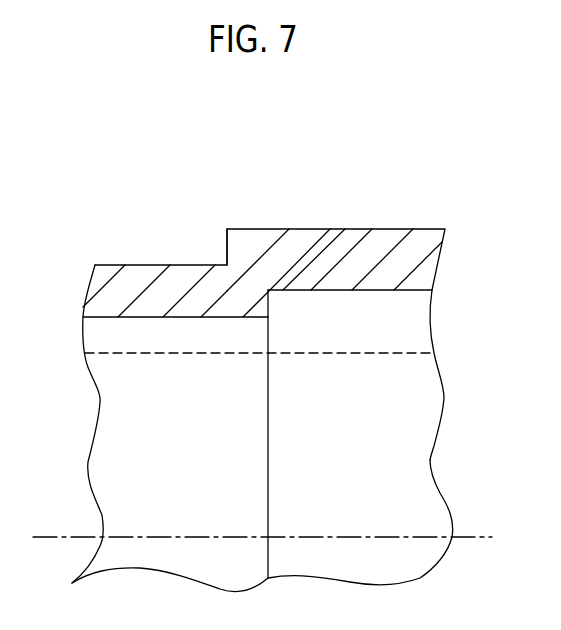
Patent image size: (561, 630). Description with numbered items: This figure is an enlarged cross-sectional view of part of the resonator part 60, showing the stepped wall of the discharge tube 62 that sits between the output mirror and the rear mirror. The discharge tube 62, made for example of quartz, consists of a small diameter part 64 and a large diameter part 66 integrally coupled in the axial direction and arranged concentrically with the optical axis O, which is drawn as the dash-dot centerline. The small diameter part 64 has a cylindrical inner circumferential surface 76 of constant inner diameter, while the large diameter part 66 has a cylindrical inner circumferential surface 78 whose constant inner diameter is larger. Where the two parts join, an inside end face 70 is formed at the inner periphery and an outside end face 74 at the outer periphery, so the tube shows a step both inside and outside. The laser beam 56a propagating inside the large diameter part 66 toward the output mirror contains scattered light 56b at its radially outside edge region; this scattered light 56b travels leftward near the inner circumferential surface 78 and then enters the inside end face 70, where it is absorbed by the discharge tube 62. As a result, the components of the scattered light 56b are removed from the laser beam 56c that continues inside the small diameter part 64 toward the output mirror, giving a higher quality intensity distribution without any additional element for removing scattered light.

The resonator part 60 is at (472, 121).
The discharge tube 62 is at (262, 166).
The small diameter part 64 is at (157, 297).
The large diameter part 66 is at (357, 258).
The inside end face 70 is at (272, 304).
The outside end face 74 is at (227, 238).
The inner circumferential surface 76 is at (149, 317).
The inner circumferential surface 78 is at (370, 290).
The laser beam 56a is at (352, 353).
The scattered light 56b is at (270, 305).
The laser beam 56c is at (153, 353).
The optical axis O is at (42, 537).